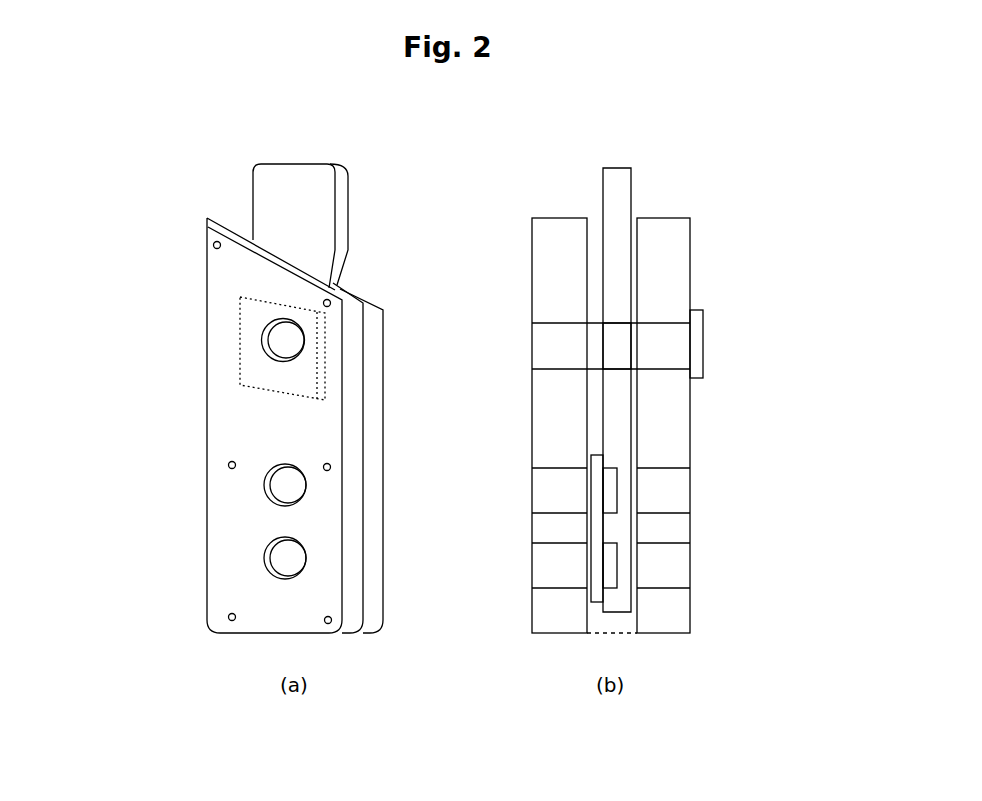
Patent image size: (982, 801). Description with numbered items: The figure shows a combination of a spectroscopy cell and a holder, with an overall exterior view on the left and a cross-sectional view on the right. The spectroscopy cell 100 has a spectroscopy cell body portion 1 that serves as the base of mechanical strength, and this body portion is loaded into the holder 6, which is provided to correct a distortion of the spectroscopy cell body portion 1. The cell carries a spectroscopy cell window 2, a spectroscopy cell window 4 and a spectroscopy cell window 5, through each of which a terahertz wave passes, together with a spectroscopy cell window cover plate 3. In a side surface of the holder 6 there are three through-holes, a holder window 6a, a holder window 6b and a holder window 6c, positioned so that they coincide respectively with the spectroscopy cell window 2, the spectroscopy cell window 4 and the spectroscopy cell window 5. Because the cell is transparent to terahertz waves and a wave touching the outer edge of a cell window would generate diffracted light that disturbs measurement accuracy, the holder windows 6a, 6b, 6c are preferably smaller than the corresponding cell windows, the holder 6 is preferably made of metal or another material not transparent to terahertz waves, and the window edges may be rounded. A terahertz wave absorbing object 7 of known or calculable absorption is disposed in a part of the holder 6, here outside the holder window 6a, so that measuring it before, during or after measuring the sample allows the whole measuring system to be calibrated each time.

The spectroscopy cell 100 is at (331, 147).
The spectroscopy cell body portion 1 is at (255, 197).
The spectroscopy cell window 2 is at (612, 350).
The spectroscopy cell window cover plate 3 is at (603, 455).
The spectroscopy cell window 4 is at (610, 497).
The spectroscopy cell window 5 is at (608, 570).
The holder 6 is at (203, 262).
The holder window 6a is at (237, 372).
The holder window 6b is at (252, 483).
The holder window 6c is at (245, 553).
The terahertz wave absorbing object 7 is at (243, 322).